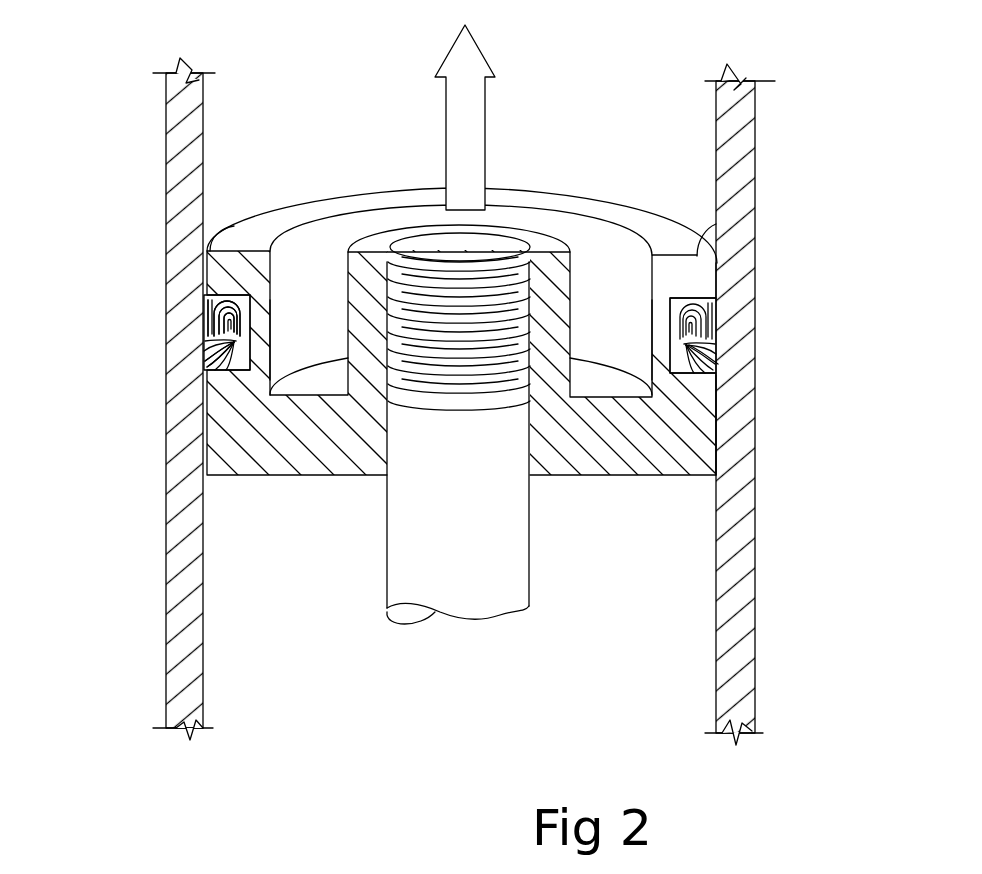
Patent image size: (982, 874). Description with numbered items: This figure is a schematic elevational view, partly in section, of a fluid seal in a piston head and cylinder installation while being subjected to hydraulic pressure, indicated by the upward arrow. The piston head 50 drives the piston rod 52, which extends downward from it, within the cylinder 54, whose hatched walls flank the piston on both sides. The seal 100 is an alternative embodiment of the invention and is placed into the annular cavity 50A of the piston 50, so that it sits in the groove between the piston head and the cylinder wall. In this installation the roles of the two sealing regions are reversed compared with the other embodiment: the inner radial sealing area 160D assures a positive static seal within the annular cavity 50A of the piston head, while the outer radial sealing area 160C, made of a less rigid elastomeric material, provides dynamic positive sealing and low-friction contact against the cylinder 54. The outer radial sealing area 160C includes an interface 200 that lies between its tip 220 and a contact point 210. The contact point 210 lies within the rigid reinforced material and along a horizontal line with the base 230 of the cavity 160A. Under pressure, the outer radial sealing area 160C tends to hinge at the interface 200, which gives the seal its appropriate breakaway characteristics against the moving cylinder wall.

The piston 50 is at (567, 476).
The annular cavity 50A is at (716, 418).
The piston rod 52 is at (472, 520).
The cylinder 54 is at (757, 556).
The seal 100 is at (196, 310).
The cavity 160A is at (217, 377).
The outer radial sealing area 160C is at (203, 360).
The inner radial sealing area 160D is at (270, 375).
The interface 200 is at (230, 338).
The contact point 210 is at (203, 317).
The tip 220 is at (235, 340).
The base 230 is at (230, 358).